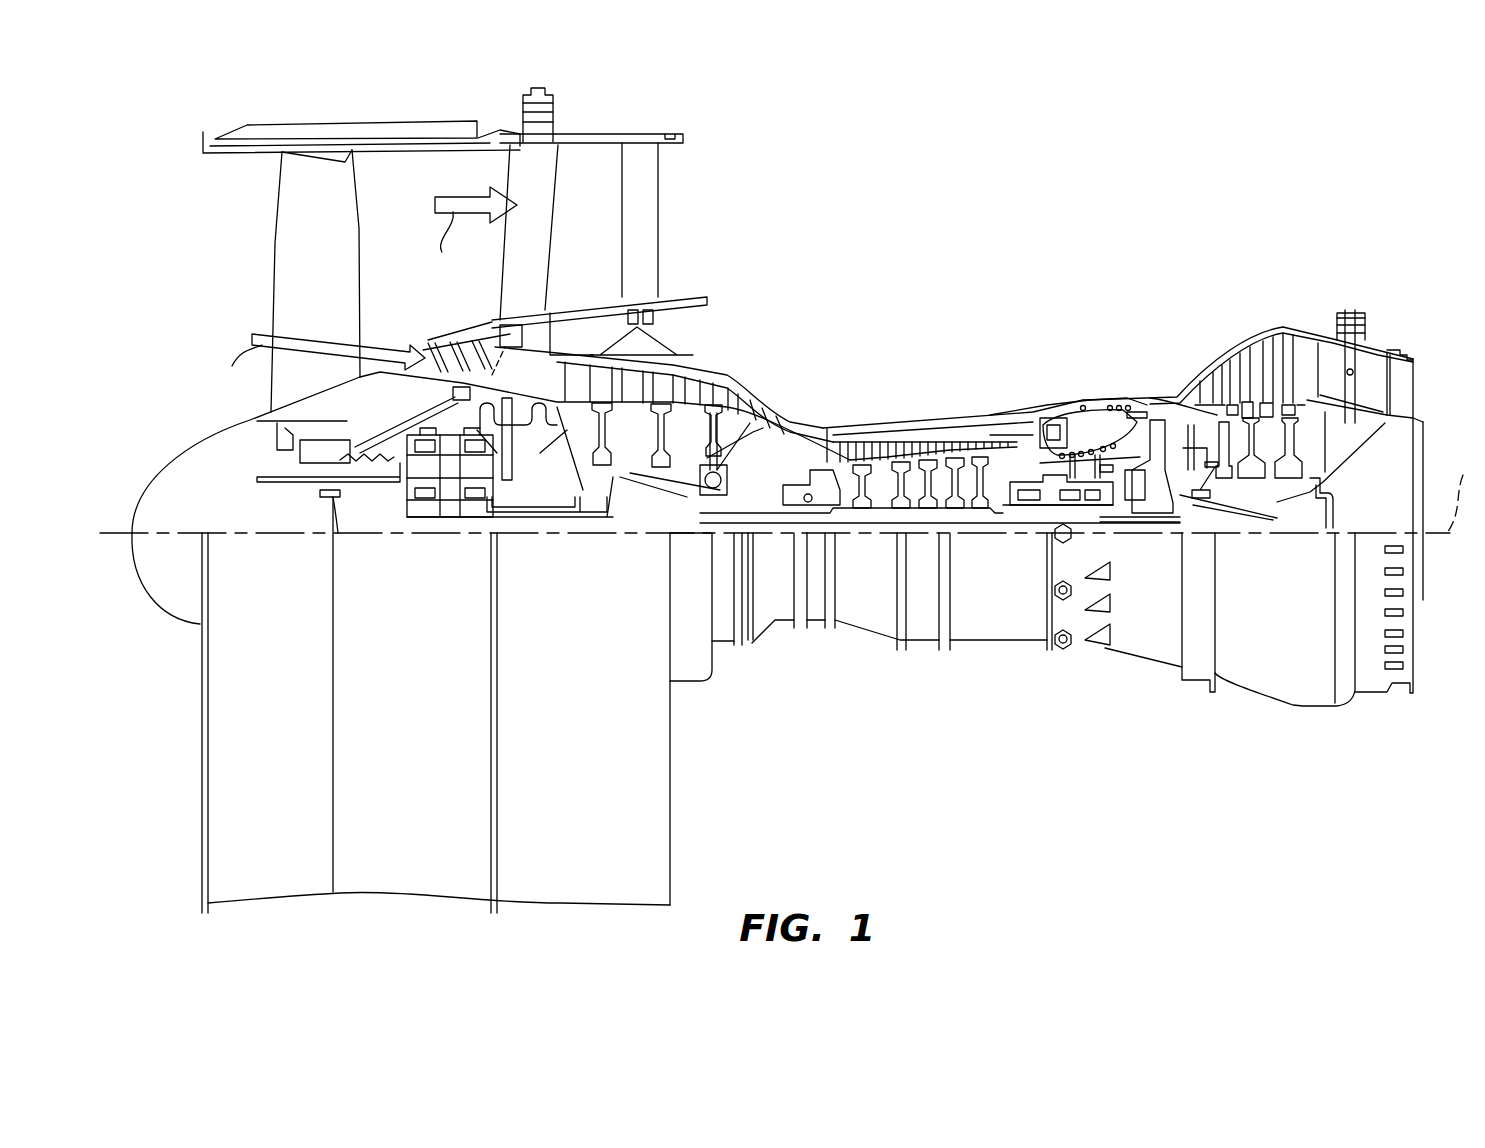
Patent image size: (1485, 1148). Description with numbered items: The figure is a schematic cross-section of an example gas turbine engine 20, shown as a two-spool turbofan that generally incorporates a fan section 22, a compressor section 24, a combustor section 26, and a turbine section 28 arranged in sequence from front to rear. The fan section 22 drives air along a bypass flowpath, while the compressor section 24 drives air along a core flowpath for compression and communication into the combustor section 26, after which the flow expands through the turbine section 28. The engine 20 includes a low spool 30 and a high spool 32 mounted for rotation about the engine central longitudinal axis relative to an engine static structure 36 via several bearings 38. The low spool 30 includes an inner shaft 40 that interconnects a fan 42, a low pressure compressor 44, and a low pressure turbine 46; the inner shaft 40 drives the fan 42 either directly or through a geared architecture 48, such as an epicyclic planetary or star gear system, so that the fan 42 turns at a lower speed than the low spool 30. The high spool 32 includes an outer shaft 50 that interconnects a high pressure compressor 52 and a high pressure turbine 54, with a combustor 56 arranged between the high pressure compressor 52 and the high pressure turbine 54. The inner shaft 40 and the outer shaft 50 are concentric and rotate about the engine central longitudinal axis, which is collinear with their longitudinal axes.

The gas turbine engine 20 is at (1140, 184).
The fan section 22 is at (495, 120).
The compressor section 24 is at (503, 273).
The combustor section 26 is at (1090, 273).
The turbine section 28 is at (1352, 273).
The low spool 30 is at (757, 482).
The high spool 32 is at (1007, 500).
The engine static structure 36 is at (924, 650).
The bearings 38 is at (238, 612).
The inner shaft 40 is at (1117, 495).
The fan 42 is at (331, 309).
The low pressure compressor 44 is at (692, 375).
The low pressure turbine 46 is at (1265, 361).
The geared architecture 48 is at (450, 483).
The outer shaft 50 is at (1130, 480).
The high pressure compressor 52 is at (847, 443).
The high pressure turbine 54 is at (1155, 427).
The combustor 56 is at (1091, 433).